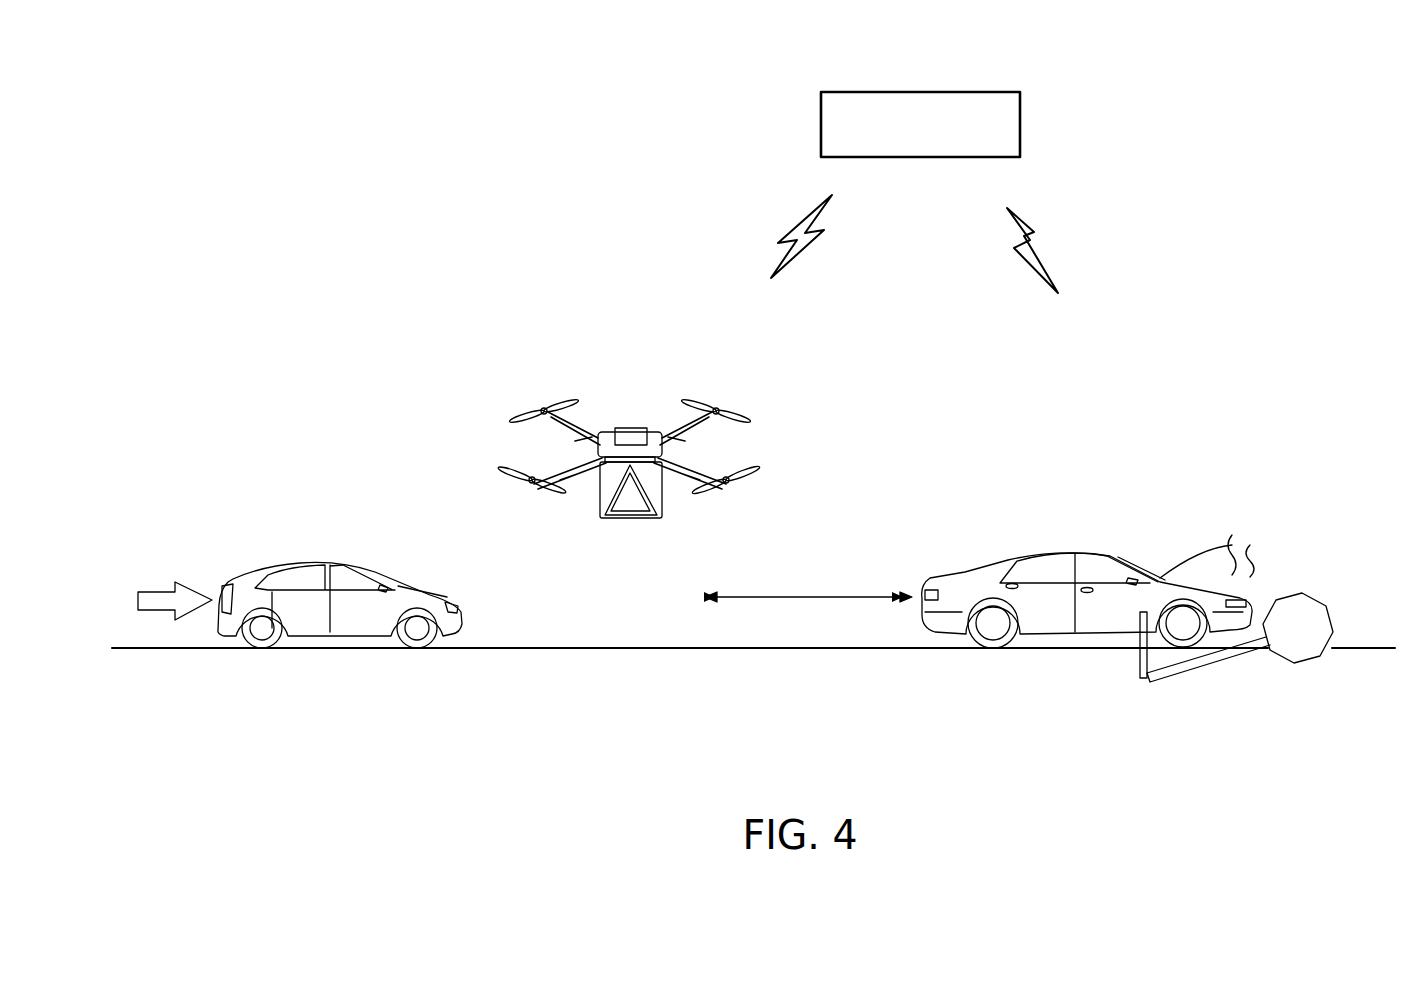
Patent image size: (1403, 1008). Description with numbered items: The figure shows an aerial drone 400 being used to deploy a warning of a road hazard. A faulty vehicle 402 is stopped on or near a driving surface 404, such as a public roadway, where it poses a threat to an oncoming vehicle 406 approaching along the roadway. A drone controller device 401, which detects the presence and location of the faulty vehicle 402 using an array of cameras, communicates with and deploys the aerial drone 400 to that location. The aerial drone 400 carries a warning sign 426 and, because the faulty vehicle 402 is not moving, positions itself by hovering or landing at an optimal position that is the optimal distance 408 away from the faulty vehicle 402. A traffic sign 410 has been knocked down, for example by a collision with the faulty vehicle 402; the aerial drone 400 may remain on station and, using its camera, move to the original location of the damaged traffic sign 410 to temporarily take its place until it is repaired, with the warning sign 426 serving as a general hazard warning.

The aerial drone 400 is at (626, 403).
The drone controller device 401 is at (1021, 119).
The faulty vehicle 402 is at (1062, 540).
The driving surface 404 is at (704, 651).
The oncoming vehicle 406 is at (319, 550).
The optimal distance 408 is at (800, 596).
The traffic sign 410 is at (1324, 566).
The warning sign 426 is at (628, 510).